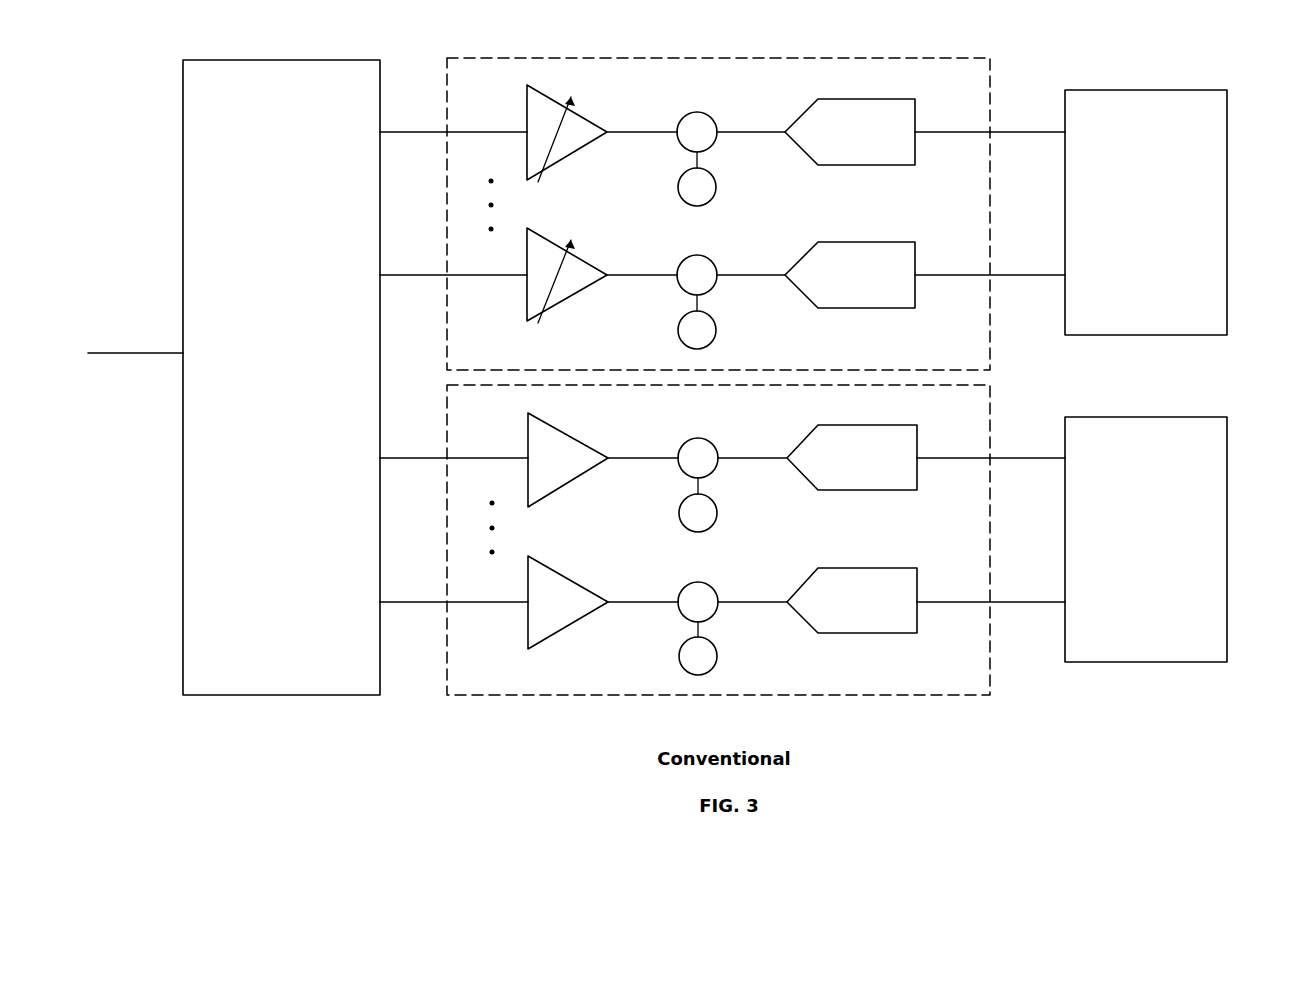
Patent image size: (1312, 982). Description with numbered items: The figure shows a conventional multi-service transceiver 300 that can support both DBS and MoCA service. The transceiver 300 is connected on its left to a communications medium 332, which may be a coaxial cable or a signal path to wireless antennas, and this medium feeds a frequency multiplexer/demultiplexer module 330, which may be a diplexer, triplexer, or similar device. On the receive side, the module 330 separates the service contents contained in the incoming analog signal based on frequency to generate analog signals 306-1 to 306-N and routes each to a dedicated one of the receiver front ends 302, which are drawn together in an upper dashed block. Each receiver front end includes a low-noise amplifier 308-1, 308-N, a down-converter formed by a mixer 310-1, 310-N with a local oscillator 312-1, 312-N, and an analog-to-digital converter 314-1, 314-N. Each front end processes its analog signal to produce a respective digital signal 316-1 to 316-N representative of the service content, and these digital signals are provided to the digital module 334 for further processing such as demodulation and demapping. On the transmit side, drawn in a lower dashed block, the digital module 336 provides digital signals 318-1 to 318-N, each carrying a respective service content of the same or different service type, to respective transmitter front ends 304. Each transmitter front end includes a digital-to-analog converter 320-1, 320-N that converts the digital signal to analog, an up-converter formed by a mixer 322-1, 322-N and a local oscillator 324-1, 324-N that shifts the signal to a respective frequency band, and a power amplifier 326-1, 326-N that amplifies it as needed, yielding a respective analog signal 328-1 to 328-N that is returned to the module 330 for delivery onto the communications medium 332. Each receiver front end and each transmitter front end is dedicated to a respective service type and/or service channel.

The multi-service transceiver 300 is at (693, 378).
The receiver front ends 302 is at (791, 56).
The transmitter front ends 304 is at (893, 697).
The analog signal 306-1 is at (478, 131).
The analog signal 306-N is at (485, 277).
The low-noise amplifier 308-1 is at (569, 160).
The low-noise amplifier 308-N is at (575, 300).
The mixer 310-1 is at (712, 147).
The mixer 310-N is at (712, 290).
The local oscillator 312-1 is at (712, 200).
The local oscillator 312-N is at (712, 343).
The analog-to-digital converter 314-1 is at (865, 166).
The analog-to-digital converter 314-N is at (865, 309).
The digital signal 316-1 is at (1020, 131).
The digital signal 316-N is at (1025, 277).
The digital signal 318-1 is at (1020, 457).
The digital signal 318-N is at (1025, 604).
The digital-to-analog converter 320-1 is at (860, 491).
The digital-to-analog converter 320-N is at (860, 634).
The mixer 322-1 is at (713, 473).
The mixer 322-N is at (713, 617).
The local oscillator 324-1 is at (713, 526).
The local oscillator 324-N is at (713, 669).
The power amplifier 326-1 is at (573, 487).
The power amplifier 326-N is at (577, 630).
The analog signal 328-1 is at (478, 457).
The analog signal 328-N is at (485, 604).
The frequency multiplexer/demultiplexer module 330 is at (281, 377).
The communications medium 332 is at (137, 355).
The digital module 334 is at (1146, 212).
The digital module 336 is at (1146, 539).